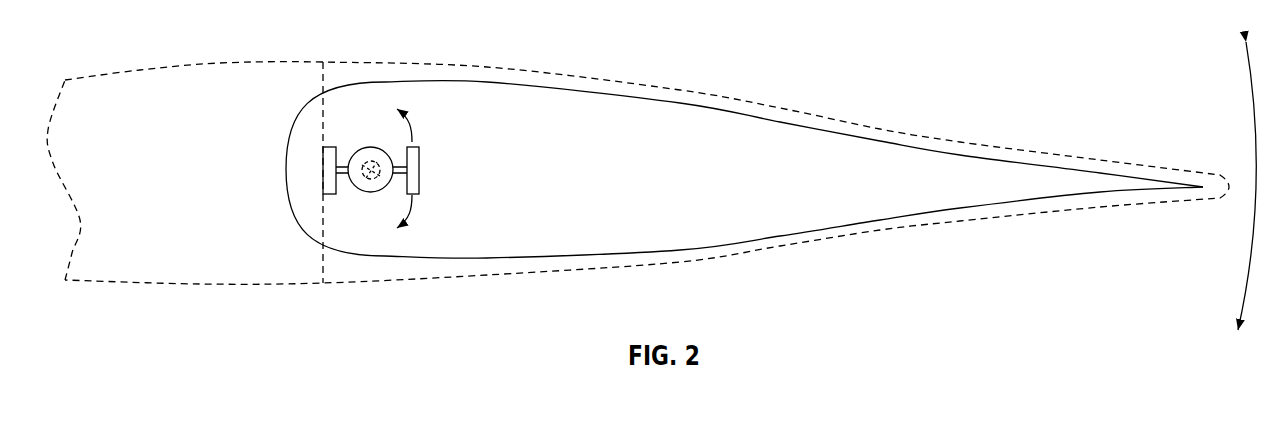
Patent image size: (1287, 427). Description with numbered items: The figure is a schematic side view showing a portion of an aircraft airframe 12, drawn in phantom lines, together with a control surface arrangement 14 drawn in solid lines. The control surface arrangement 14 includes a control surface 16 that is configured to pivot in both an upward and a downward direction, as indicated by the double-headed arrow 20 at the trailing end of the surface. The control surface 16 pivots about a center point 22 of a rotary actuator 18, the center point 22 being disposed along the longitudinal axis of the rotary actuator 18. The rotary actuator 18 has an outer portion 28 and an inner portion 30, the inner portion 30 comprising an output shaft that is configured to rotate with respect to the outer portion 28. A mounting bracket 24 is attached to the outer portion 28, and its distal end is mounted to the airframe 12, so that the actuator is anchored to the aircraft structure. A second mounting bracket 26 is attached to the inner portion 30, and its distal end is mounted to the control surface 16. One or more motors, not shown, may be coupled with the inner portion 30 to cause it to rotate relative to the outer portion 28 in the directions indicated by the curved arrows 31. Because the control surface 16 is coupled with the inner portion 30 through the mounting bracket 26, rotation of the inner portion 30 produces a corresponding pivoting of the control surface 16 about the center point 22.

The airframe 12 is at (222, 63).
The control surface arrangement 14 is at (675, 99).
The control surface 16 is at (727, 241).
The rotary actuator 18 is at (372, 141).
The arrow 20 is at (1248, 280).
The center point 22 is at (372, 168).
The mounting bracket 24 is at (330, 146).
The mounting bracket 26 is at (420, 170).
The outer portion 28 is at (370, 192).
The inner portion 30 is at (362, 190).
The arrows 31 is at (407, 115).